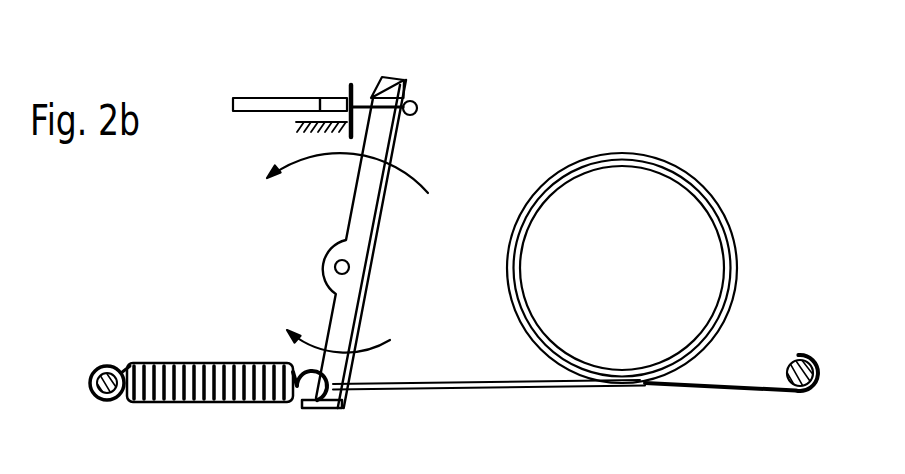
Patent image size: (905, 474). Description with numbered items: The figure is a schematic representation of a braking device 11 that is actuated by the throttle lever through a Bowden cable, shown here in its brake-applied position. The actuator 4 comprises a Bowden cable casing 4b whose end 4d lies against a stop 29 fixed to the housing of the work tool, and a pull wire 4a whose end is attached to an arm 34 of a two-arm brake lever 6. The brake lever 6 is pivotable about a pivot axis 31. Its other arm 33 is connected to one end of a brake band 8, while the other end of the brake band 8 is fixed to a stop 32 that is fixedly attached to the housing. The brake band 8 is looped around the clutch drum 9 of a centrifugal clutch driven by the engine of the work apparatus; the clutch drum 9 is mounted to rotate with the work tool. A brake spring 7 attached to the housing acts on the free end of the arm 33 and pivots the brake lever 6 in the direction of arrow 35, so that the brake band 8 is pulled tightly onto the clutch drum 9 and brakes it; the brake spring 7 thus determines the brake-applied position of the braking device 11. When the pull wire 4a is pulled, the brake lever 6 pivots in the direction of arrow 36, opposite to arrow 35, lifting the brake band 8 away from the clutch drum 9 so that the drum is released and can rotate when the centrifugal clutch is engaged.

The actuator 4 is at (250, 82).
The pull wire 4a is at (405, 78).
The Bowden cable casing 4b is at (284, 98).
The casing end 4d is at (332, 98).
The brake lever 6 is at (362, 192).
The brake spring 7 is at (142, 362).
The brake band 8 is at (468, 380).
The clutch drum 9 is at (629, 248).
The braking device 11 is at (615, 97).
The stop 29 is at (353, 84).
The pivot axis 31 is at (328, 270).
The stop 32 is at (805, 358).
The arm 33 is at (343, 407).
The arm 34 is at (406, 91).
The arrow 35 is at (390, 340).
The arrow 36 is at (410, 165).